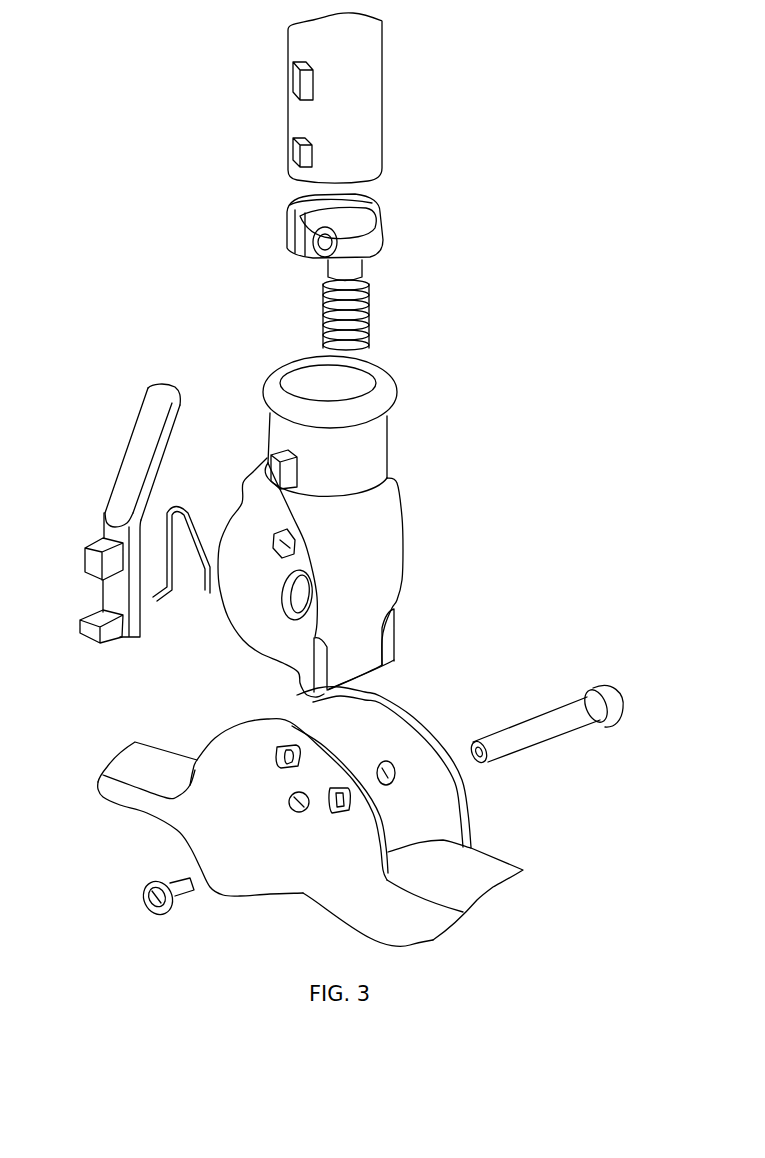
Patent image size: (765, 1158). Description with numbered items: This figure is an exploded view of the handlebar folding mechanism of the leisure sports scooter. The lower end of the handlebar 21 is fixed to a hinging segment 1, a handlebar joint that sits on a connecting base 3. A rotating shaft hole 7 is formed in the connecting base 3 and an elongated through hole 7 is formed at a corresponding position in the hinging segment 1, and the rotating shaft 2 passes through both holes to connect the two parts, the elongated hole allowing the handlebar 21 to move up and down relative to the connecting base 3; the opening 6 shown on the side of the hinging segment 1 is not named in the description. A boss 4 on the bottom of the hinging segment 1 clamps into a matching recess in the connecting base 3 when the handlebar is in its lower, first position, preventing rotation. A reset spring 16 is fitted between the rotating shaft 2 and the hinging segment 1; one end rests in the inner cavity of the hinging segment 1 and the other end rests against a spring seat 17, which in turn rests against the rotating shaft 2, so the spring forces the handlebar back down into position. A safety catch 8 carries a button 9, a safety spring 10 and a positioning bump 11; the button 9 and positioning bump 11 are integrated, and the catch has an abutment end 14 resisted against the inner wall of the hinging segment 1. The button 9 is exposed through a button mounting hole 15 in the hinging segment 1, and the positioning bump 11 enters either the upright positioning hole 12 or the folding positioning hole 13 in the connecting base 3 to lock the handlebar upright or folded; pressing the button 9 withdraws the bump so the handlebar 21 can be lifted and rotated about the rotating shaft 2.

The hinging segment 1 is at (330, 526).
The rotating shaft 2 is at (550, 723).
The connecting base 3 is at (217, 820).
The boss 4 is at (308, 687).
The hole 6 is at (300, 592).
The rotating shaft hole / elongated through hole 7 is at (288, 810).
The safety catch 8 is at (112, 518).
The button 9 is at (90, 557).
The safety spring 10 is at (173, 567).
The positioning bump 11 is at (83, 623).
The upright positioning hole 12 is at (286, 748).
The folding positioning hole 13 is at (338, 806).
The abutment end 14 is at (163, 395).
The button mounting hole 15 is at (285, 487).
The reset spring 16 is at (368, 315).
The spring seat 17 is at (362, 222).
The handlebar 21 is at (370, 87).